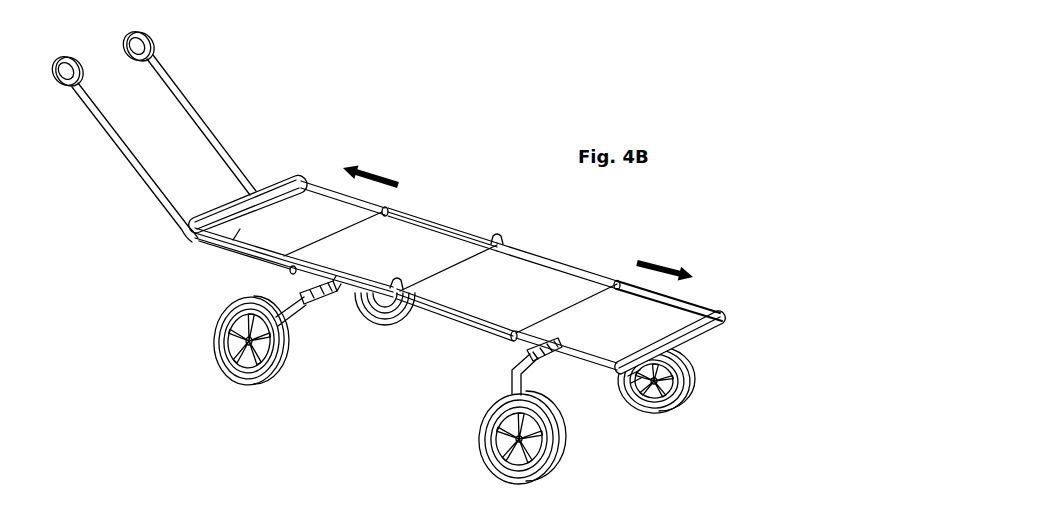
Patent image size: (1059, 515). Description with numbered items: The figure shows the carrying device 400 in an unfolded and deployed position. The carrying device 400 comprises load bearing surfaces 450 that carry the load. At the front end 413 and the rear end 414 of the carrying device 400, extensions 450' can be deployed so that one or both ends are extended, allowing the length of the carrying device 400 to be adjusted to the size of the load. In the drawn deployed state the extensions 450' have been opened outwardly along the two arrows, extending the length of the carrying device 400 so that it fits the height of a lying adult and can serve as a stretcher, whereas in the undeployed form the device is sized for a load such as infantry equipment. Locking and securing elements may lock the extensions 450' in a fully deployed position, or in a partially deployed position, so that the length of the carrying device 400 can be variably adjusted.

The carrying device 400 is at (688, 209).
The front end 413 is at (262, 188).
The rear end 414 is at (727, 324).
The load bearing surfaces 450 is at (452, 275).
The extensions 450' is at (466, 274).